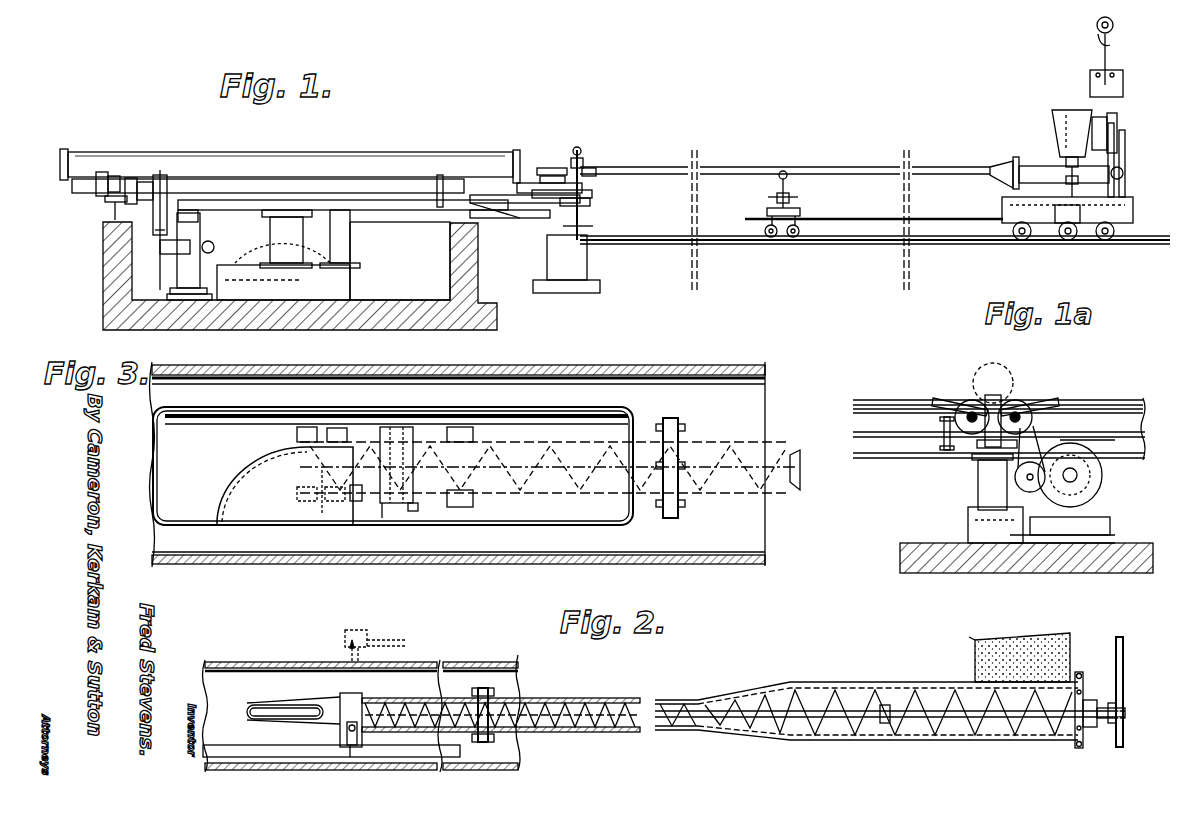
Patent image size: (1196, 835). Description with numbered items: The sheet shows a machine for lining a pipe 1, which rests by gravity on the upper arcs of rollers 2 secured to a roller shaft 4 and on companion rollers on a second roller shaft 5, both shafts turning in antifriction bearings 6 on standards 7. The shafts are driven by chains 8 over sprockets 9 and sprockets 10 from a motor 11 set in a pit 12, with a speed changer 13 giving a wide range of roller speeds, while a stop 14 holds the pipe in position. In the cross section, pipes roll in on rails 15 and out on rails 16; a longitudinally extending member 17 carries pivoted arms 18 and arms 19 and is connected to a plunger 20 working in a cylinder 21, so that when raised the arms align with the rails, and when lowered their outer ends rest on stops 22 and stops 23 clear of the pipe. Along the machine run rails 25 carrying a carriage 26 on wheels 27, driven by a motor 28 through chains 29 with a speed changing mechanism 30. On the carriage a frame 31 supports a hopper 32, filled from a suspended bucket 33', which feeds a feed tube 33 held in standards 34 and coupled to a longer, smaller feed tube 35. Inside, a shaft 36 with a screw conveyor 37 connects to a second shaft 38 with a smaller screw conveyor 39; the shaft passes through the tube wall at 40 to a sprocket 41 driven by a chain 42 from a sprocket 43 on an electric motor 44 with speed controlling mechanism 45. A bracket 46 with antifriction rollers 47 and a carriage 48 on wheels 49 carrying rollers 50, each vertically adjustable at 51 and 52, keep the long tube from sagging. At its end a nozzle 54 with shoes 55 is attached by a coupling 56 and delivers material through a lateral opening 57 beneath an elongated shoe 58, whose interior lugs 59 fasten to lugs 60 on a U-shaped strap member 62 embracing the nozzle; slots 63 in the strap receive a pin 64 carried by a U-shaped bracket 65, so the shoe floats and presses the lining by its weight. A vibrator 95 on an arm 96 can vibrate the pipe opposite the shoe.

In FIG. 1, the pipe to be lined 1 is at (418, 152).
In FIG. 1A, the pipe to be lined 1 is at (988, 364).
In FIG. 3, the pipe to be lined 1 is at (250, 375).
In FIG. 2, the pipe to be lined 1 is at (232, 662).
In FIG. 1A, the rollers 2 is at (970, 400).
In FIG. 1, the roller shaft 4 is at (320, 182).
In FIG. 1A, the roller shaft 4 is at (980, 444).
In FIG. 1A, the second roller shaft 5 is at (1060, 436).
In FIG. 1, the antifriction bearings 6 is at (108, 184).
In FIG. 1, the standards 7 is at (110, 205).
In FIG. 1, the chains 8 is at (162, 247).
In FIG. 1, the sprockets 9 is at (160, 180).
In FIG. 1, the sprockets 10 is at (175, 256).
In FIG. 1, the motor 11 is at (285, 228).
In FIG. 1, the pit 12 is at (140, 330).
In FIG. 1, the speed changer 13 is at (240, 268).
In FIG. 1, the stop 14 is at (520, 186).
In FIG. 1A, the rails 15 is at (1108, 405).
In FIG. 1A, the rails 16 is at (878, 400).
In FIG. 1, the longitudinally extending member 17 is at (278, 200).
In FIG. 1A, the pivoted arms 18 is at (940, 400).
In FIG. 1A, the pivoted arms 19 is at (1022, 402).
In FIG. 1A, the plunger 20 is at (978, 470).
In FIG. 1A, the cylinder 21 is at (985, 495).
In FIG. 1A, the stops 22 is at (944, 425).
In FIG. 1A, the stops 23 is at (1040, 408).
In FIG. 1, the rails 25 is at (740, 244).
In FIG. 1, the carriage 26 is at (1133, 214).
In FIG. 1, the wheels 27 is at (1105, 241).
In FIG. 1, the motor 28 is at (1120, 203).
In FIG. 1, the chains 29 is at (1070, 241).
In FIG. 1, the speed changing mechanism 30 is at (1060, 215).
In FIG. 1, the frame 31 is at (1126, 158).
In FIG. 1, the hopper 32 is at (1075, 110).
In FIG. 2, the hopper 32 is at (1068, 636).
In FIG. 1, the feed tube 33 is at (1063, 158).
In FIG. 2, the feed tube 33 is at (888, 691).
In FIG. 1, the bucket 33' is at (1129, 57).
In FIG. 1, the standards 34 is at (1000, 162).
In FIG. 1, the feed tube 35 is at (735, 167).
In FIG. 3, the feed tube 35 is at (550, 467).
In FIG. 2, the feed tube 35 is at (605, 698).
In FIG. 2, the shaft 36 is at (905, 740).
In FIG. 2, the screw conveyor 37 is at (990, 740).
In FIG. 2, the second shaft 38 is at (545, 698).
In FIG. 2, the screw conveyor 39 is at (585, 732).
In FIG. 2, the shaft extension 40 is at (1096, 727).
In FIG. 1, the sprocket 41 is at (1124, 173).
In FIG. 2, the sprocket 41 is at (1120, 700).
In FIG. 1, the chain 42 is at (1115, 140).
In FIG. 2, the chain 42 is at (1124, 652).
In FIG. 1, the sprocket 43 is at (1118, 120).
In FIG. 1, the electric motor 44 is at (1050, 130).
In FIG. 1, the speed controlling mechanism 45 is at (1108, 122).
In FIG. 1, the bracket 46 is at (594, 173).
In FIG. 1, the antifriction rollers 47 is at (582, 162).
In FIG. 1, the carriage 48 is at (767, 212).
In FIG. 1, the wheels 49 is at (792, 238).
In FIG. 1, the rollers 50 is at (787, 174).
In FIG. 1, the vertical adjustment 51 is at (586, 221).
In FIG. 1, the vertical adjustment 52 is at (790, 194).
In FIG. 1, the nozzle 54 is at (548, 168).
In FIG. 3, the nozzle 54 is at (268, 465).
In FIG. 2, the nozzle 54 is at (315, 705).
In FIG. 1, the shoes 55 is at (562, 187).
In FIG. 3, the coupling 56 is at (680, 425).
In FIG. 2, the coupling 56 is at (490, 688).
In FIG. 3, the lateral opening 57 is at (285, 527).
In FIG. 2, the lateral opening 57 is at (270, 710).
In FIG. 3, the shoe 58 is at (540, 410).
In FIG. 2, the shoe 58 is at (392, 757).
In FIG. 3, the interior lugs 59 is at (308, 427).
In FIG. 3, the lugs 60 is at (340, 428).
In FIG. 3, the U-shaped strap member 62 is at (356, 501).
In FIG. 2, the U-shaped strap member 62 is at (358, 696).
In FIG. 3, the slots 63 is at (382, 518).
In FIG. 2, the slots 63 is at (350, 757).
In FIG. 3, the pin 64 is at (400, 430).
In FIG. 2, the pin 64 is at (347, 733).
In FIG. 3, the U-shaped bracket 65 is at (415, 511).
In FIG. 2, the vibrator 95 is at (360, 632).
In FIG. 2, the arm 96 is at (410, 640).